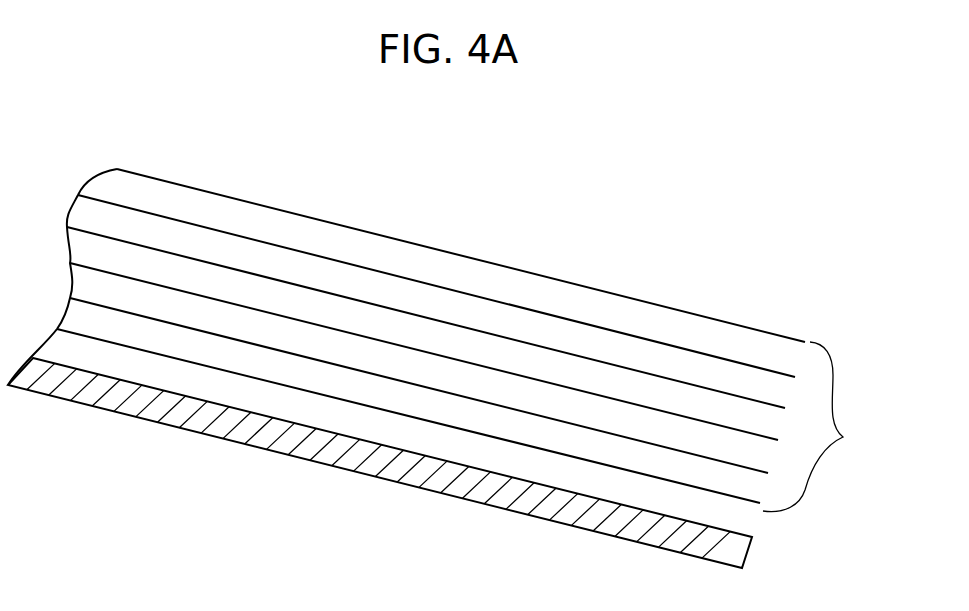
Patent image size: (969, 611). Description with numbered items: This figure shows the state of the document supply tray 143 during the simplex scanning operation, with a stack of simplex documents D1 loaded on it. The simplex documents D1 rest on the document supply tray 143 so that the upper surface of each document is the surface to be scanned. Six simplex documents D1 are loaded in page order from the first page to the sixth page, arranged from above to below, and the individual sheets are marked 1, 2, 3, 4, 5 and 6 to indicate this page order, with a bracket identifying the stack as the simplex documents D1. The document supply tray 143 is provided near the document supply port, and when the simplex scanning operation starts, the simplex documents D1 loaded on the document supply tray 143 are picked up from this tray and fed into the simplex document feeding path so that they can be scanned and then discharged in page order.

The first light emitting period line 1 is at (790, 338).
The second light emitting period line 2 is at (780, 373).
The third light emitting period line 3 is at (770, 404).
The fourth light emitting period line 4 is at (764, 436).
The fifth light emitting period line 5 is at (756, 470).
The sixth light emitting period line 6 is at (746, 500).
The document supply tray 143 is at (287, 447).
The simplex documents D1 is at (820, 427).